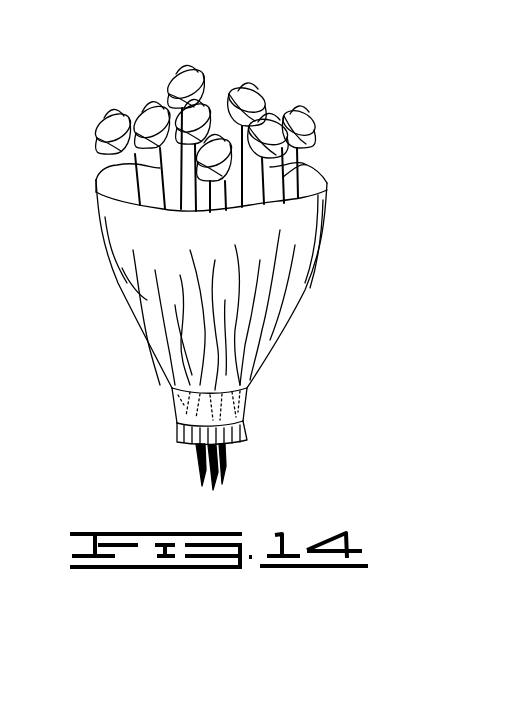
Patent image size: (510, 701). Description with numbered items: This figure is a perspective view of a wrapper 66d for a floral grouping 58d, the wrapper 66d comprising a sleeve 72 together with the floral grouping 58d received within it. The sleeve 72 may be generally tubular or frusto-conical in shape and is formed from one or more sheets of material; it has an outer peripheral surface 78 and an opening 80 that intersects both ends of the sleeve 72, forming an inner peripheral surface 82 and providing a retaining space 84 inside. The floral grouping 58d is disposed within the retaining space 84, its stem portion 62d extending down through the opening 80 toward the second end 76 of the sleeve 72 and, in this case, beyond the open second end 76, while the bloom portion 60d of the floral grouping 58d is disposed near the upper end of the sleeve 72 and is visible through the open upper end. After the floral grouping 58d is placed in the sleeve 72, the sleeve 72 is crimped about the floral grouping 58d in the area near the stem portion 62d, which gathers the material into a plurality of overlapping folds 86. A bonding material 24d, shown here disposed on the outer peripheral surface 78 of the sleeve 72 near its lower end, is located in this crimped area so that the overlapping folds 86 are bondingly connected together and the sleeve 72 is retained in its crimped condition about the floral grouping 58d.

The wrapper 66d is at (140, 66).
The floral grouping 58d is at (257, 85).
The bloom portion 60d is at (300, 108).
The retaining space 84 is at (318, 158).
The inner peripheral surface 82 is at (325, 177).
The opening 80 is at (96, 181).
The sleeve 72 is at (320, 258).
The outer peripheral surface 78 is at (243, 285).
The overlapping folds 86 is at (253, 360).
The bonding material 24d is at (175, 400).
The second end 76 is at (182, 448).
The stem portion 62d is at (230, 455).